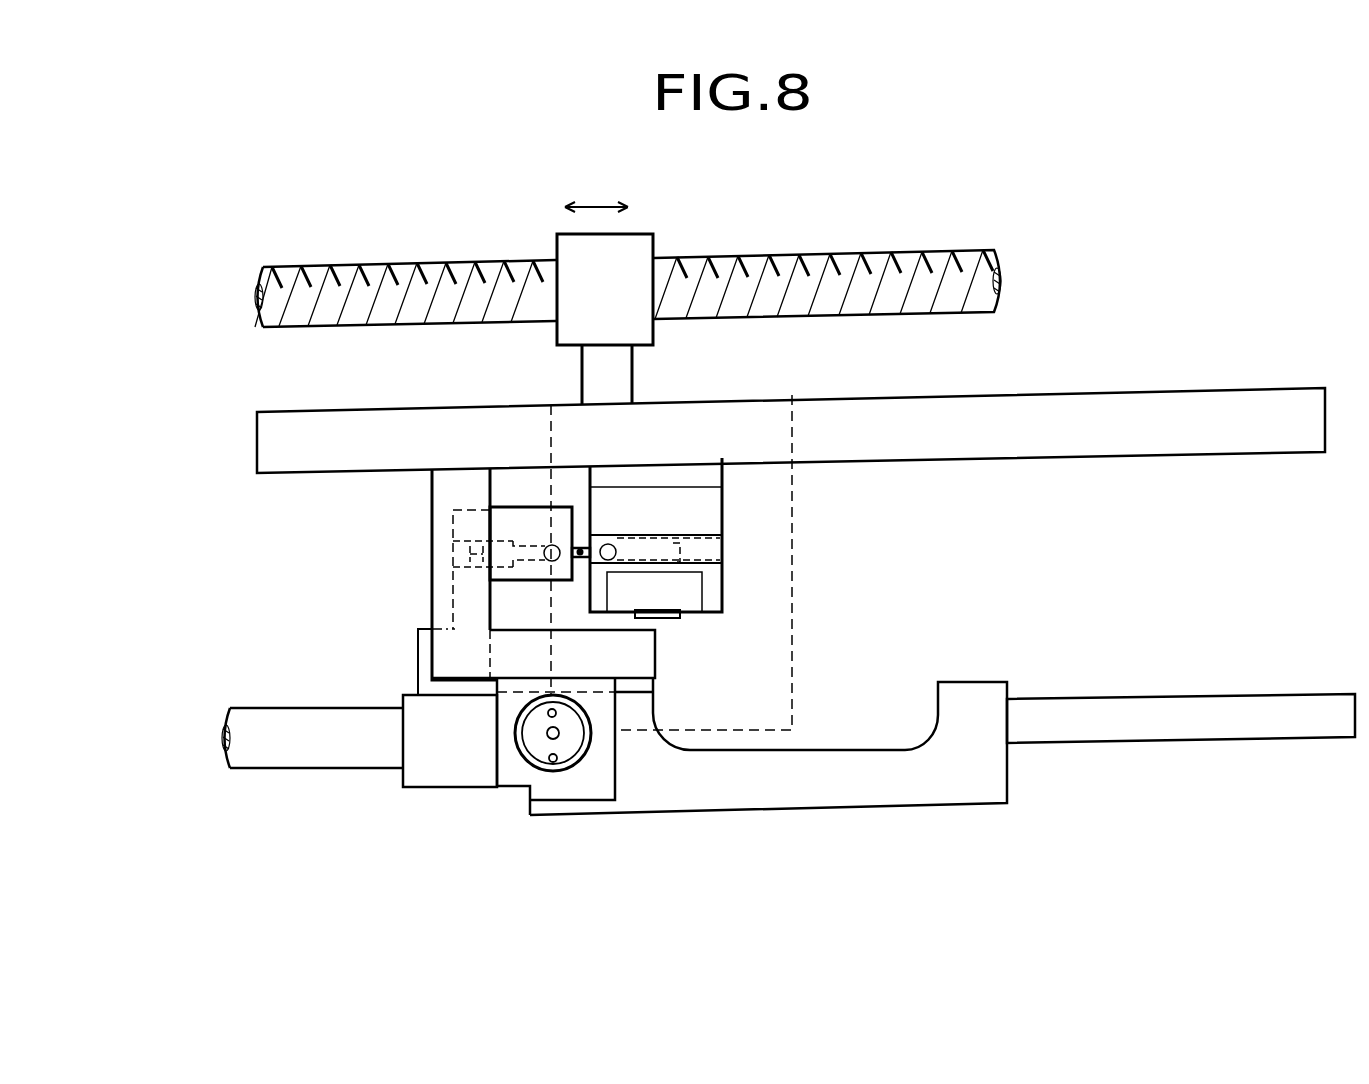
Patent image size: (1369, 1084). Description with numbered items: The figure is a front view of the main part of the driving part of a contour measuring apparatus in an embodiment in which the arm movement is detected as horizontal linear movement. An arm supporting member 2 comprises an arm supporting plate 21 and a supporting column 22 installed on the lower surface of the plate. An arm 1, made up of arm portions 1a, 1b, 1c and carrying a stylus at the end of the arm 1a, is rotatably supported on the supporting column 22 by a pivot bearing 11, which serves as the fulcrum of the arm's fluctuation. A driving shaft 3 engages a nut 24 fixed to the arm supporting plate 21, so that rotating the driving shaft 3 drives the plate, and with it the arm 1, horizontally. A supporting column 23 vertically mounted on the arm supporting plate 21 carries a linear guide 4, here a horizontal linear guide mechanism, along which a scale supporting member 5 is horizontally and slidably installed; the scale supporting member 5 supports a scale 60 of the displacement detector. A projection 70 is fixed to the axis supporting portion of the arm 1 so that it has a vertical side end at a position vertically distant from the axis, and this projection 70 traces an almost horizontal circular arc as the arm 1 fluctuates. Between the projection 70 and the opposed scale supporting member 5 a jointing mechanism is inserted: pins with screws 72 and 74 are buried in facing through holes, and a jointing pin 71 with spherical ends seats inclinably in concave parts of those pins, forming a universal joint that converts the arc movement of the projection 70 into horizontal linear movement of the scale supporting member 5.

The arm 1 is at (788, 769).
The arm portion 1a is at (268, 758).
The arm portion 1b is at (977, 807).
The arm portion 1c is at (1168, 730).
The pivot bearing 11 is at (535, 745).
The arm supporting member 2 is at (725, 503).
The arm supporting plate 21 is at (1148, 405).
The supporting column 22 is at (440, 602).
The supporting column 23 is at (707, 472).
The nut 24 is at (655, 245).
The driving shaft 3 is at (840, 260).
The linear guide 4 is at (707, 518).
The scale supporting member 5 is at (708, 588).
The scale 60 is at (692, 602).
The projection 70 is at (470, 585).
The jointing pin 71 is at (580, 558).
The pin with screw 72 is at (528, 563).
The pin with screw 74 is at (625, 545).